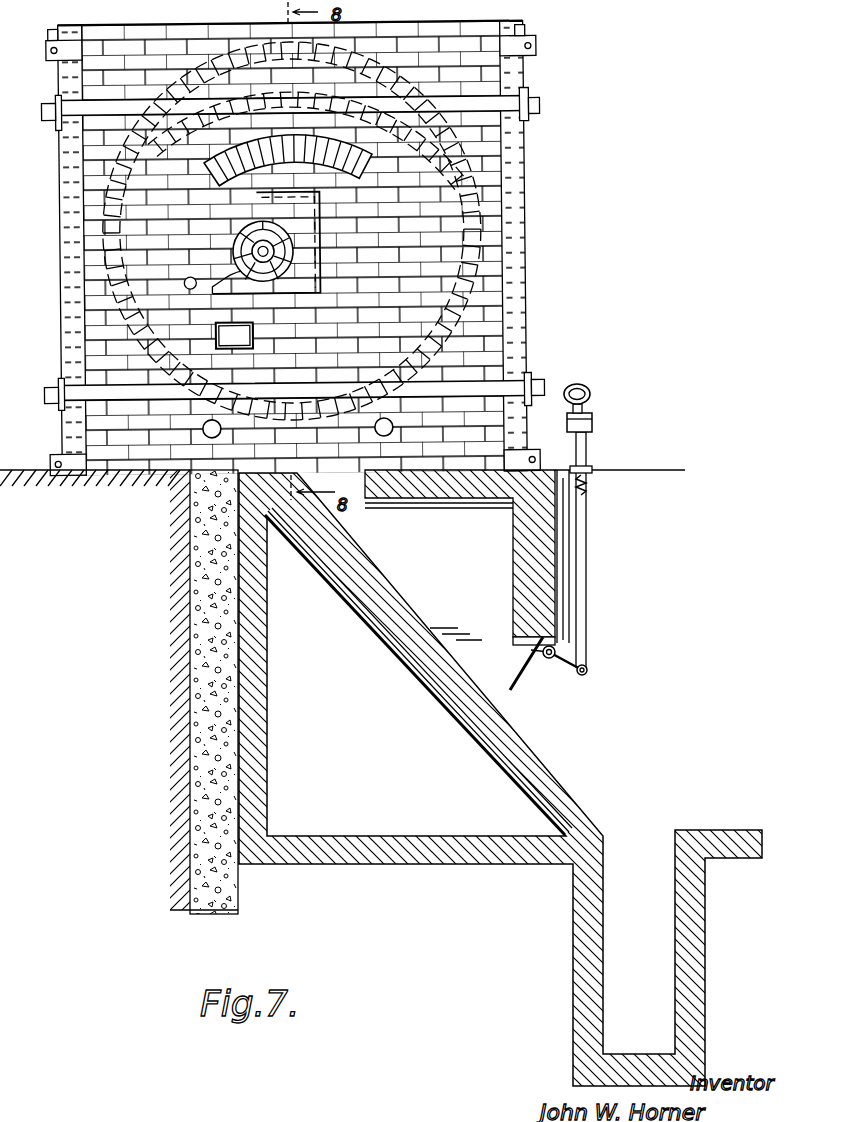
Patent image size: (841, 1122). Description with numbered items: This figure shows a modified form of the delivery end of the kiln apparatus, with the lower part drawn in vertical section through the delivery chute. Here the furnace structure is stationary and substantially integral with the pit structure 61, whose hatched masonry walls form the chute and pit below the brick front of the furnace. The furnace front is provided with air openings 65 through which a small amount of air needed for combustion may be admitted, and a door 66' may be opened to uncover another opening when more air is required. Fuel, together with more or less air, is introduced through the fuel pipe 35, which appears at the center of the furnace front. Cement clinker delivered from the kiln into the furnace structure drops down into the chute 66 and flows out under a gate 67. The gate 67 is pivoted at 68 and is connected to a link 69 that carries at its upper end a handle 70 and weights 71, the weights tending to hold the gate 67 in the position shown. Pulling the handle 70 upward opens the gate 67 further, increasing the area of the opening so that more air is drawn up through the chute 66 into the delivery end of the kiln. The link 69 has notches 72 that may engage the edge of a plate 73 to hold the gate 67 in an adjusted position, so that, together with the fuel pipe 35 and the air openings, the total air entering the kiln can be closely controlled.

The fuel pipe 35 is at (238, 248).
The pit structure 61 is at (345, 590).
The air openings 65 is at (203, 435).
The chute 66 is at (500, 779).
The door 66' is at (234, 335).
The gate 67 is at (519, 686).
The pivot 68 is at (556, 651).
The link 69 is at (587, 583).
The handle 70 is at (600, 374).
The weights 71 is at (593, 418).
The notches 72 is at (586, 494).
The plate 73 is at (582, 466).